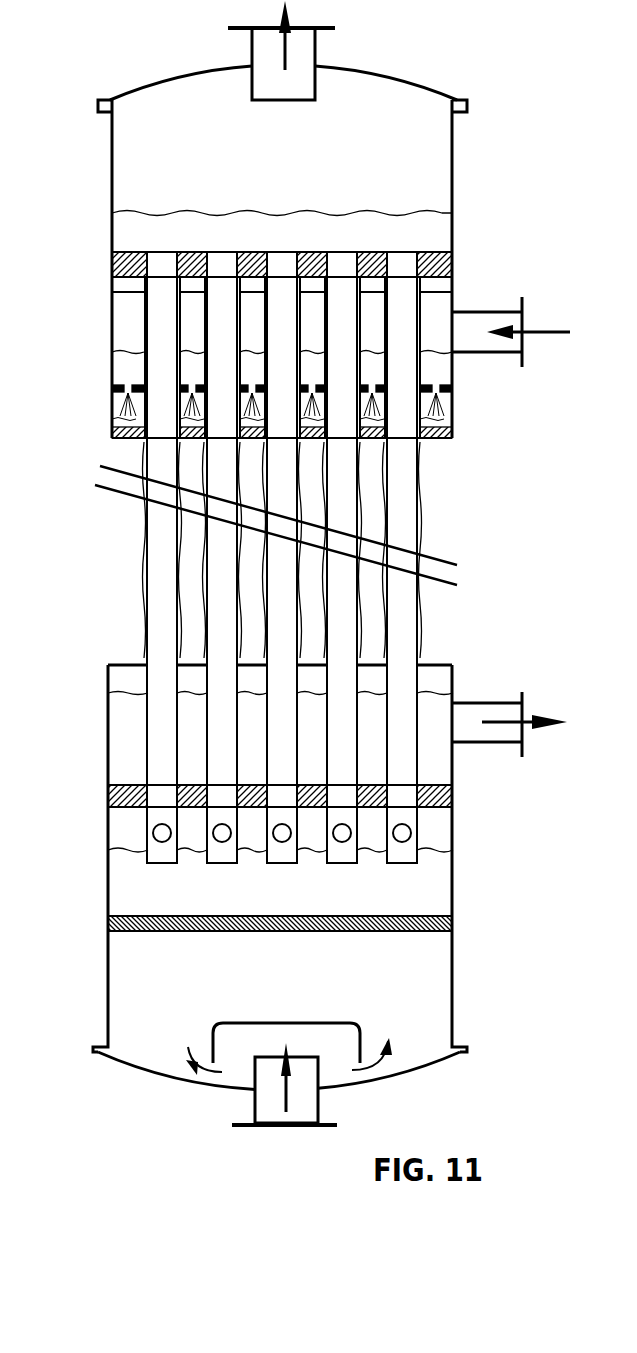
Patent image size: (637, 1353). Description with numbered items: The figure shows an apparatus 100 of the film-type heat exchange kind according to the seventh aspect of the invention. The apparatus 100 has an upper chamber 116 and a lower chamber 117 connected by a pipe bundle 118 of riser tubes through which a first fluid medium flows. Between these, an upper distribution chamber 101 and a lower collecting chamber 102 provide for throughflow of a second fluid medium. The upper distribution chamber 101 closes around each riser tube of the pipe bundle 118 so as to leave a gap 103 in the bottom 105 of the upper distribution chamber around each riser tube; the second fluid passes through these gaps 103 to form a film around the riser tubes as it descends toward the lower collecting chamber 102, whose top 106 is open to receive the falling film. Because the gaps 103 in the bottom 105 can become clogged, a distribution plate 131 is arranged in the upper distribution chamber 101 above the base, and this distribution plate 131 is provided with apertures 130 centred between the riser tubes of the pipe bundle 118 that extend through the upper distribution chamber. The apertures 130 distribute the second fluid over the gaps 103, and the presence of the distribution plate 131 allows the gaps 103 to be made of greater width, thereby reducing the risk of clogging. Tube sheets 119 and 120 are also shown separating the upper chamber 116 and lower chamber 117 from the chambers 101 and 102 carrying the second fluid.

The apparatus 100 is at (126, 576).
The upper distribution chamber 101 is at (437, 303).
The lower collecting chamber 102 is at (443, 681).
The gap 103 is at (422, 440).
The bottom 105 is at (116, 442).
The top 106 is at (125, 664).
The upper chamber 116 is at (433, 161).
The lower chamber 117 is at (435, 950).
The pipe bundle 118 is at (348, 518).
The upper tube sheet 119 is at (452, 264).
The lower tube sheet 120 is at (452, 797).
The apertures 130 is at (370, 378).
The distribution plate 131 is at (452, 388).